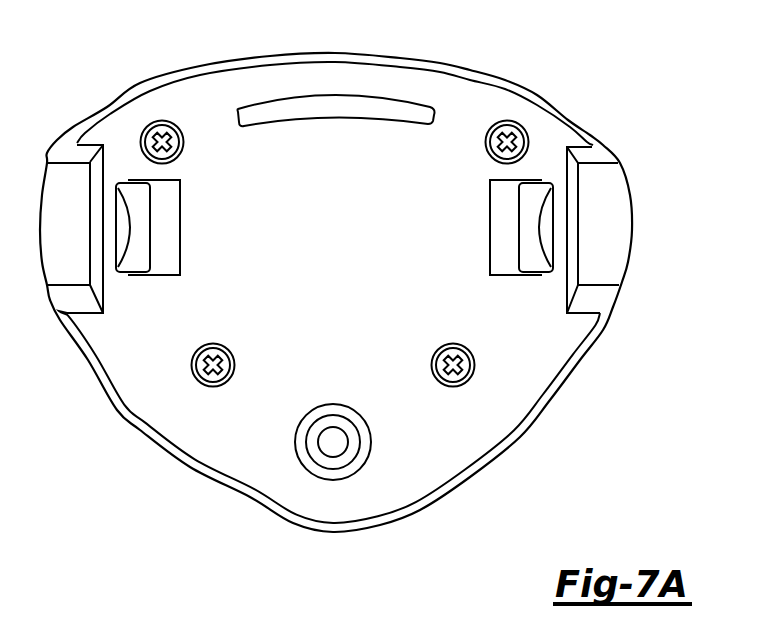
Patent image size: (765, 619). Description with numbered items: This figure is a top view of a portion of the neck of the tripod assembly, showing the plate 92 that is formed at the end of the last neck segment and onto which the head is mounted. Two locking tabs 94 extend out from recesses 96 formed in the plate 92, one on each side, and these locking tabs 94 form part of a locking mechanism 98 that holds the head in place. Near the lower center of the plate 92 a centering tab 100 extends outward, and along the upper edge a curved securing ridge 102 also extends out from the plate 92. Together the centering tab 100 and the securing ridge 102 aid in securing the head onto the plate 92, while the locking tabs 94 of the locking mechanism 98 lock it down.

The plate 92 is at (507, 75).
The locking tabs 94 is at (137, 262).
The recesses 96 is at (177, 247).
The locking mechanism 98 is at (542, 294).
The centering tab 100 is at (338, 442).
The securing ridge 102 is at (365, 104).